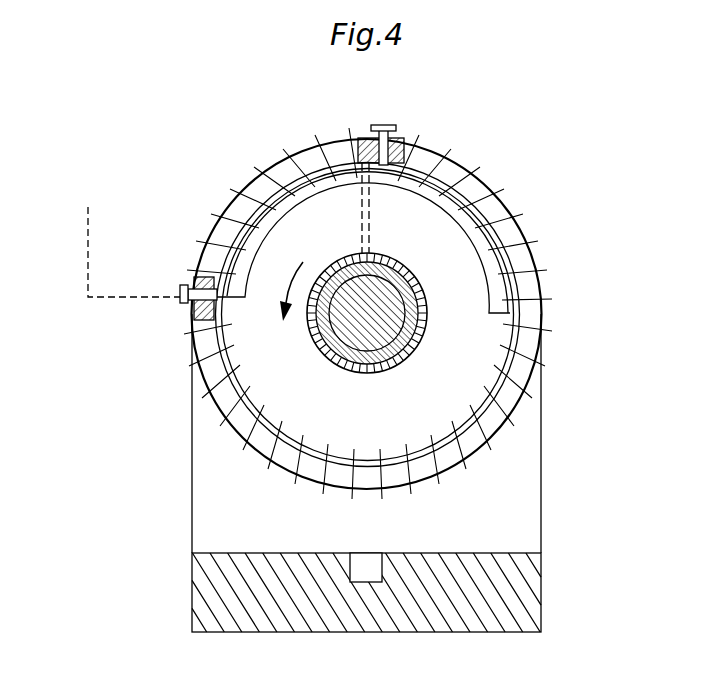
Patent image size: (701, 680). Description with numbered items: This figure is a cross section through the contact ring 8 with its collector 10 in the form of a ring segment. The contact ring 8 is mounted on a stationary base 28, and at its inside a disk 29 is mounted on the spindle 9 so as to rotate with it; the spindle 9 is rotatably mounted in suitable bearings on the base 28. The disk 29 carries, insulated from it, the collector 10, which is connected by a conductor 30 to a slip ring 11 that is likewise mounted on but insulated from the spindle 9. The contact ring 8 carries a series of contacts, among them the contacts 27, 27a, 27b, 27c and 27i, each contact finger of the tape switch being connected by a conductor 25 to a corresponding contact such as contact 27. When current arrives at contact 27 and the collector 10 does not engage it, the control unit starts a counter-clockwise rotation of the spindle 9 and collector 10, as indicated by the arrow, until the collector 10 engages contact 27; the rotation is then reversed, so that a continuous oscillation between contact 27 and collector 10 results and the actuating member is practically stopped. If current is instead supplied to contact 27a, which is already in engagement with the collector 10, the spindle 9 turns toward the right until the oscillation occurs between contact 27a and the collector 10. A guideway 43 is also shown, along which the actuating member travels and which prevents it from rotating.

The contact ring 8 is at (470, 183).
The spindle 9 is at (348, 318).
The collector 10 is at (490, 255).
The slip ring 11 is at (408, 328).
The conductor 25 is at (119, 240).
The contact 27 is at (180, 298).
The contact 27a is at (193, 265).
The contact 27b is at (204, 232).
The contact 27c is at (225, 208).
The contact 27i is at (390, 127).
The stationary base 28 is at (200, 588).
The disk 29 is at (222, 395).
The conductor 30 is at (364, 221).
The guideway 43 is at (364, 562).